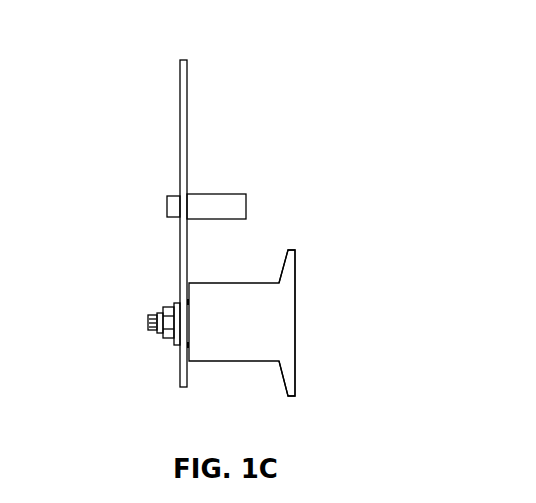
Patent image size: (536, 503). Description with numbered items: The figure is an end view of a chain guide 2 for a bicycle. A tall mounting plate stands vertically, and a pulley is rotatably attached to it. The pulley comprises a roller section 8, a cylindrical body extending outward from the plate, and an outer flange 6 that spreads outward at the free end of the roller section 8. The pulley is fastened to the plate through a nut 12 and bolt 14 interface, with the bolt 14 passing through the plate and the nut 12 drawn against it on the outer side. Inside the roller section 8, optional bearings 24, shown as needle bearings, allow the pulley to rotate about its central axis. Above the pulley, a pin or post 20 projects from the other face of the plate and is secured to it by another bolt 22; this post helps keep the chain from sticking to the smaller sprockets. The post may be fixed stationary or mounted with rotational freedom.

The chain guide 2 is at (157, 63).
The outer flange 6 is at (289, 264).
The roller section 8 is at (240, 362).
The nut 12 is at (174, 303).
The bolt 14 is at (148, 321).
The pin or post 20 is at (196, 193).
The bolt 22 is at (174, 196).
The bearings 24 is at (275, 343).